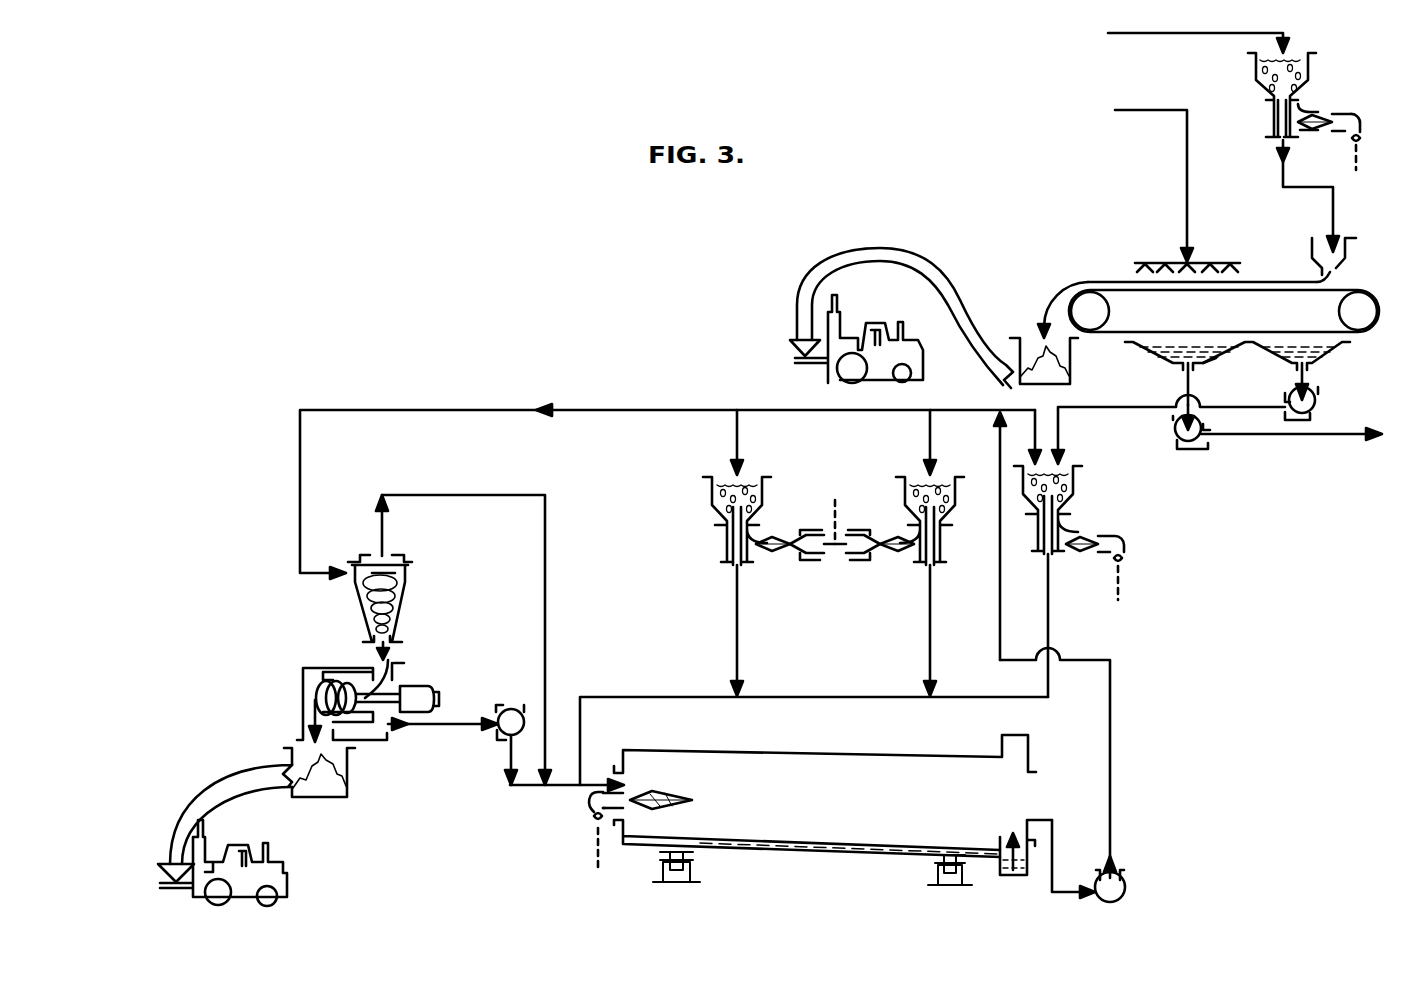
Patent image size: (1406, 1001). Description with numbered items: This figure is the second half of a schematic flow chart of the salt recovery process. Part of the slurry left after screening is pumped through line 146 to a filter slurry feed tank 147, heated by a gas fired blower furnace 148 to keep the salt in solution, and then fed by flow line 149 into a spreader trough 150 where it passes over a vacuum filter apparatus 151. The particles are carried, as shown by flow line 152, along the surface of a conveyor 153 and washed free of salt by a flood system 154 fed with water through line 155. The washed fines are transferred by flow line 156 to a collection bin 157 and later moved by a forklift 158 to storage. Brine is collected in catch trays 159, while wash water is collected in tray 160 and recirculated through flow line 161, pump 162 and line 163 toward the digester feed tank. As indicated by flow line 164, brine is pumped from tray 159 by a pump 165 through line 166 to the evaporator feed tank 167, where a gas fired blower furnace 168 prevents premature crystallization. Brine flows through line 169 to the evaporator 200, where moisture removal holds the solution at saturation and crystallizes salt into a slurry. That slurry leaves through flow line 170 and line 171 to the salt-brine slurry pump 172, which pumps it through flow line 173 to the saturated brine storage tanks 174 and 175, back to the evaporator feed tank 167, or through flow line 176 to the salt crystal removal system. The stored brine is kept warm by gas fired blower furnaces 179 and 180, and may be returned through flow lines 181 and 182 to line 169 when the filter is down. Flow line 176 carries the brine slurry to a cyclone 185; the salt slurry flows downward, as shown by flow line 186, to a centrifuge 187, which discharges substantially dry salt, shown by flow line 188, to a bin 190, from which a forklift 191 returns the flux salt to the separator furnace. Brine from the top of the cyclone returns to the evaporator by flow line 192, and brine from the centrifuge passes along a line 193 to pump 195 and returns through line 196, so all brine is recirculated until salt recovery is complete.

The line 146 is at (1136, 36).
The filter slurry feed tank 147 is at (1256, 68).
The gas fired blower furnace 148 is at (1343, 115).
The flow line 149 is at (1335, 213).
The spreader trough 150 is at (1350, 246).
The vacuum filter apparatus 151 is at (1350, 276).
The flow line 152 is at (1270, 283).
The conveyor 153 is at (1350, 328).
The flood system 154 is at (1155, 262).
The line 155 is at (1187, 160).
The flow line 156 is at (1060, 300).
The collection bin 157 is at (1072, 360).
The forklift 158 is at (808, 365).
The catch trays 159 is at (1338, 352).
The tray 160 is at (1216, 360).
The flow line 161 is at (1186, 378).
The pump 162 is at (1183, 449).
The line 163 is at (1250, 437).
The flow line 164 is at (1316, 376).
The pump 165 is at (1317, 402).
The line 166 is at (1062, 428).
The evaporator feed tank 167 is at (1075, 485).
The gas fired blower furnace 168 is at (1112, 537).
The line 169 is at (846, 697).
The flow line 170 is at (1040, 820).
The line 171 is at (1053, 858).
The salt-brine slurry pump 172 is at (1125, 890).
The flow line 173 is at (1112, 748).
The saturated brine storage tank 174 is at (713, 489).
The saturated brine storage tank 175 is at (907, 489).
The flow line 176 is at (600, 412).
The gas fired blower furnace 179 is at (810, 556).
The gas fired blower furnace 180 is at (852, 556).
The flow line 181 is at (737, 588).
The flow line 182 is at (930, 588).
The cyclone 185 is at (360, 612).
The flow line 186 is at (392, 658).
The centrifuge 187 is at (345, 668).
The flow line 188 is at (310, 700).
The bin 190 is at (347, 765).
The forklift 191 is at (288, 872).
The flow line 192 is at (423, 495).
The line 193 is at (412, 727).
The pump 195 is at (510, 708).
The line 196 is at (522, 787).
The evaporator 200 is at (850, 752).